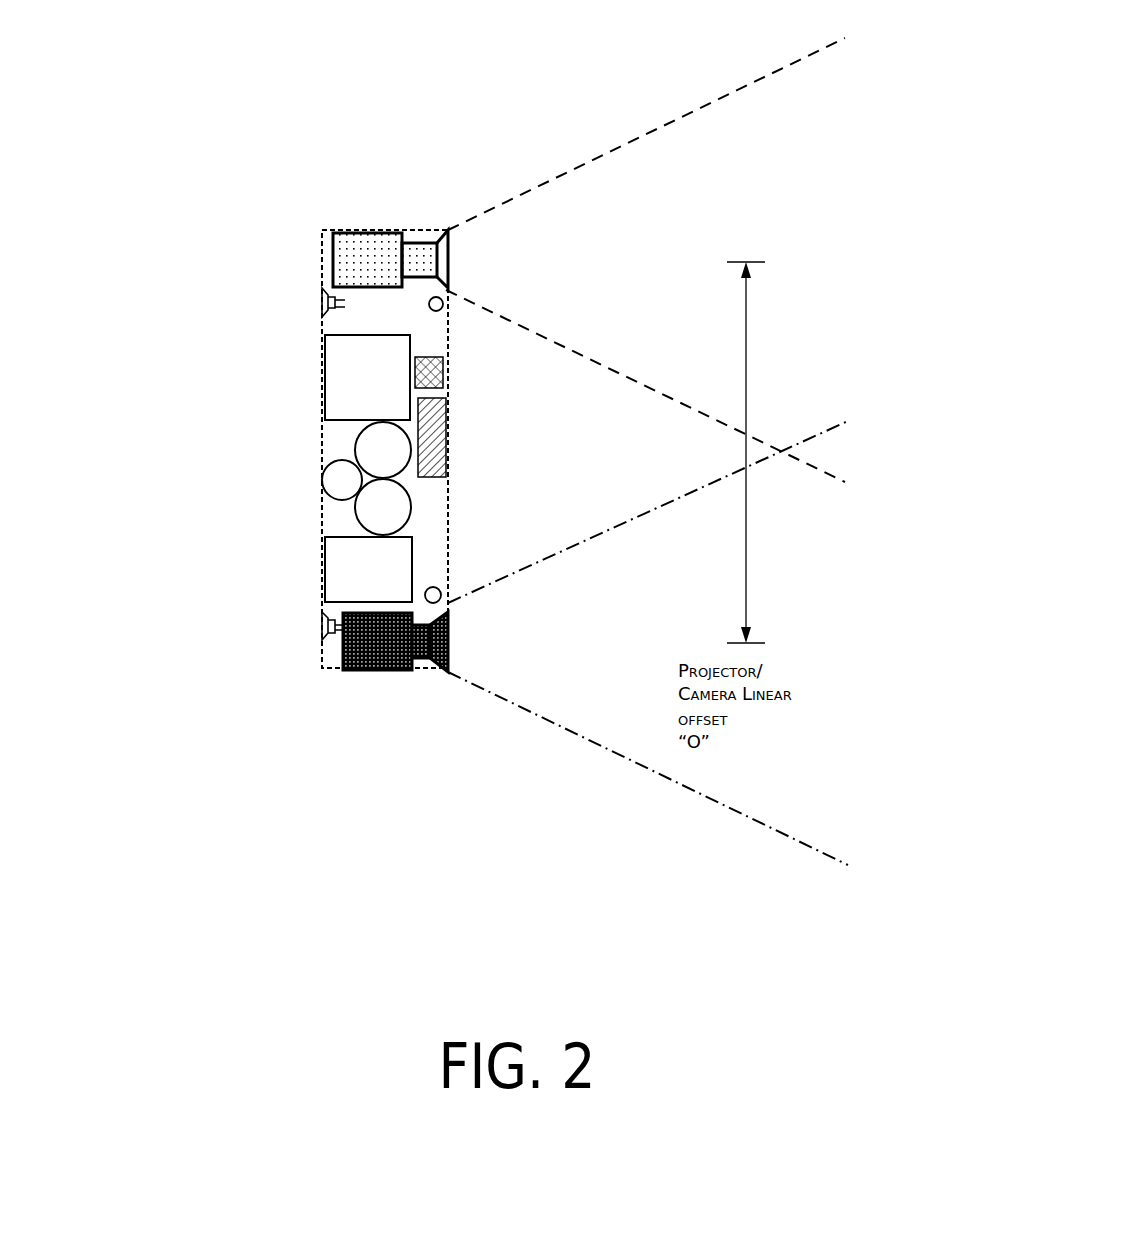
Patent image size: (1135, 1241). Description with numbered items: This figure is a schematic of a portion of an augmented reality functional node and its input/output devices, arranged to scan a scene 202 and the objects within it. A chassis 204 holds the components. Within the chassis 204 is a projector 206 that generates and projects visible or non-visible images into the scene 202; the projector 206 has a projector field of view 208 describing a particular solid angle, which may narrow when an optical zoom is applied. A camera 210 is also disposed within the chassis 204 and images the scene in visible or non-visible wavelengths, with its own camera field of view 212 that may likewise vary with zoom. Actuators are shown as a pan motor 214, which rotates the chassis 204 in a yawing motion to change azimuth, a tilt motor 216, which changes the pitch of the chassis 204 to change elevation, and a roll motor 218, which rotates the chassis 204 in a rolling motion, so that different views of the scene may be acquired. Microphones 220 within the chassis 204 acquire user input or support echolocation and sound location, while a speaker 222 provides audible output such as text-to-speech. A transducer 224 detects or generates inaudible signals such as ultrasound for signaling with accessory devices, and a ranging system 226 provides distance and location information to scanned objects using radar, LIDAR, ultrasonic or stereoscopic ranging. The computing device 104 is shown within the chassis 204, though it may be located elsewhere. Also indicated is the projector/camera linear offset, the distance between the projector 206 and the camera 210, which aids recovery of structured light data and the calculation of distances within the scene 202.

The computing device 104 is at (365, 378).
The scene 202 is at (875, 452).
The chassis 204 is at (383, 230).
The projector 206 is at (370, 262).
The projector field of view 208 is at (653, 132).
The camera 210 is at (365, 645).
The camera field of view 212 is at (607, 747).
The pan motor 214 is at (356, 449).
The tilt motor 216 is at (356, 510).
The roll motor 218 is at (322, 481).
The microphone 220 is at (443, 300).
The speaker 222 is at (322, 627).
The transducer 224 is at (441, 360).
The ranging system 226 is at (436, 434).